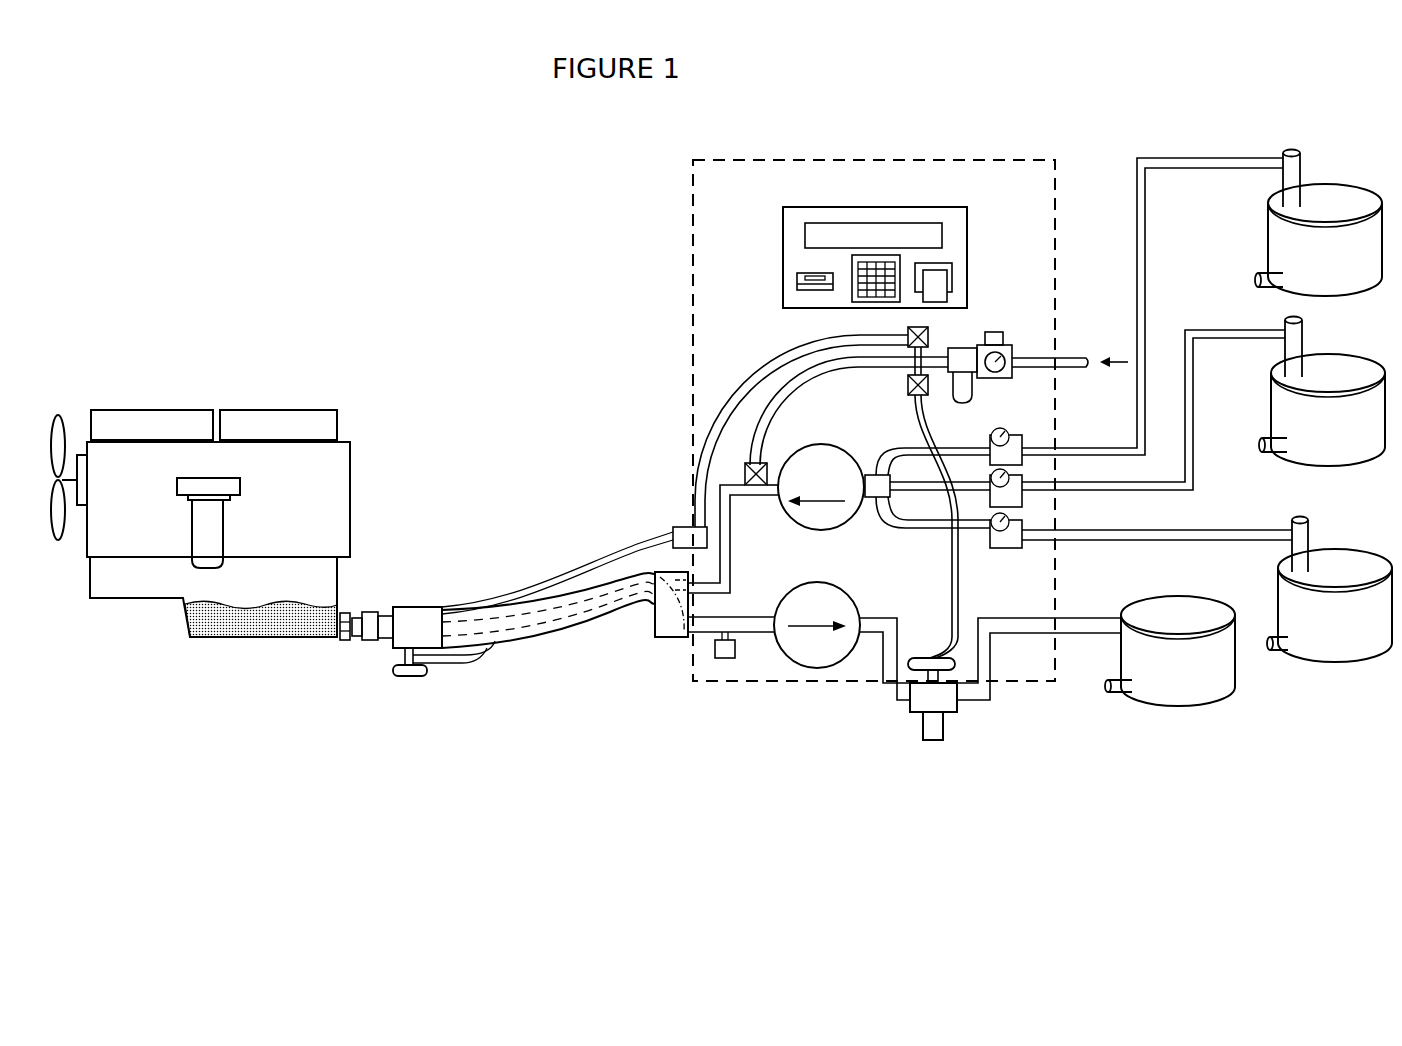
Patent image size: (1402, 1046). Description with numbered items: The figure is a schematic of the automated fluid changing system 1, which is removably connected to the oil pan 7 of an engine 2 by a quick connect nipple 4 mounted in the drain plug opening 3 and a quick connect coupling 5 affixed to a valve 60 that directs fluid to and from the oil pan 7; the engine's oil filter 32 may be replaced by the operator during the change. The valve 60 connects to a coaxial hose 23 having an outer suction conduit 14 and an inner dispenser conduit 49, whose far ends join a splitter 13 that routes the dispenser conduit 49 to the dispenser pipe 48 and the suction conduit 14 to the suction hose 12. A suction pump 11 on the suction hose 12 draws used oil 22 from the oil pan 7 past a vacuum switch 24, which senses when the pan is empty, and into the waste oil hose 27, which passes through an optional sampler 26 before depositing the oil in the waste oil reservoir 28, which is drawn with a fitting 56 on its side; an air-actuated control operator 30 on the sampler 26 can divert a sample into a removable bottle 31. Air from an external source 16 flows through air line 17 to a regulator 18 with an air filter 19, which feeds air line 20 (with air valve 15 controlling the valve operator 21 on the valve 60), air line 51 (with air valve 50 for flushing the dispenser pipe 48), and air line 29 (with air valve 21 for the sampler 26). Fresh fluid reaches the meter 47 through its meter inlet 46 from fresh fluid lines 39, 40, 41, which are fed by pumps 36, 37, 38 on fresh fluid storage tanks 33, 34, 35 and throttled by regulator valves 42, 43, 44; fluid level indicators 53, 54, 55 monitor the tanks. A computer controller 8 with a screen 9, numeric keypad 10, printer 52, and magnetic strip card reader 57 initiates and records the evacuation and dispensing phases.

The automated fluid changing system 1 is at (968, 160).
The engine 2 is at (350, 452).
The drain plug opening 3 is at (330, 637).
The quick connect nipple 4 is at (342, 614).
The quick connect coupling 5 is at (368, 612).
The oil pan 7 is at (183, 621).
The computer controller 8 is at (968, 221).
The screen 9 is at (860, 219).
The numeric keypad 10 is at (855, 297).
The suction pump 11 is at (818, 668).
The suction hose 12 is at (765, 632).
The splitter 13 is at (655, 637).
The outer suction conduit 14 is at (600, 630).
The air valve 15 is at (930, 337).
The external air source 16 is at (1070, 350).
The air line 17 is at (1012, 350).
The regulator 18 is at (996, 332).
The air filter 19 is at (963, 403).
The air line 20 is at (760, 368).
The air valve 21 is at (405, 676).
The used oil 22 is at (258, 631).
The coaxial hose 23 is at (560, 640).
The vacuum switch 24 is at (713, 660).
The sampler 26 is at (915, 713).
The waste oil hose 27 is at (1080, 618).
The waste oil reservoir 28 is at (1185, 703).
The air line 29 is at (950, 578).
The control operator 30 is at (895, 682).
The bottle 31 is at (950, 730).
The oil filter 32 is at (225, 526).
The fresh fluid storage tank 33 is at (1320, 190).
The fresh fluid storage tank 34 is at (1340, 356).
The fresh fluid storage tank 35 is at (1346, 661).
The pump 36 is at (1283, 153).
The pump 37 is at (1305, 326).
The pump 38 is at (1310, 526).
The fresh fluid line 39 is at (1147, 236).
The fresh fluid line 40 is at (1194, 376).
The fresh fluid line 41 is at (1205, 529).
The regulator valve 42 is at (1022, 443).
The regulator valve 43 is at (1022, 483).
The regulator valve 44 is at (1022, 529).
The meter inlet 46 is at (872, 498).
The meter 47 is at (822, 530).
The dispenser pipe 48 is at (730, 562).
The inner dispenser conduit 49 is at (495, 608).
The air valve 50 is at (765, 462).
The air line 51 is at (830, 380).
The printer 52 is at (953, 283).
The fluid level indicator 53 is at (1255, 280).
The fluid level indicator 54 is at (1262, 445).
The fluid level indicator 55 is at (1272, 637).
The waste tank drain 56 is at (1105, 688).
The magnetic strip card reader 57 is at (796, 278).
The valve 60 is at (430, 607).